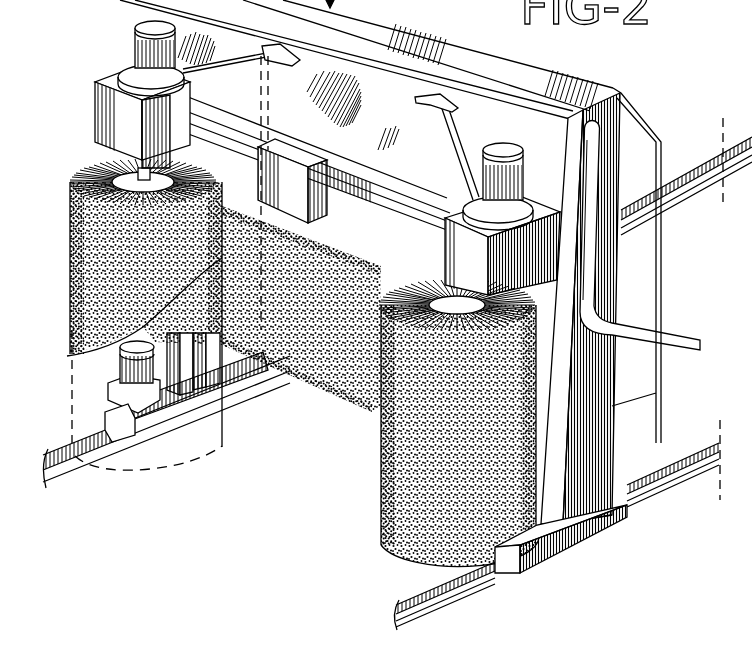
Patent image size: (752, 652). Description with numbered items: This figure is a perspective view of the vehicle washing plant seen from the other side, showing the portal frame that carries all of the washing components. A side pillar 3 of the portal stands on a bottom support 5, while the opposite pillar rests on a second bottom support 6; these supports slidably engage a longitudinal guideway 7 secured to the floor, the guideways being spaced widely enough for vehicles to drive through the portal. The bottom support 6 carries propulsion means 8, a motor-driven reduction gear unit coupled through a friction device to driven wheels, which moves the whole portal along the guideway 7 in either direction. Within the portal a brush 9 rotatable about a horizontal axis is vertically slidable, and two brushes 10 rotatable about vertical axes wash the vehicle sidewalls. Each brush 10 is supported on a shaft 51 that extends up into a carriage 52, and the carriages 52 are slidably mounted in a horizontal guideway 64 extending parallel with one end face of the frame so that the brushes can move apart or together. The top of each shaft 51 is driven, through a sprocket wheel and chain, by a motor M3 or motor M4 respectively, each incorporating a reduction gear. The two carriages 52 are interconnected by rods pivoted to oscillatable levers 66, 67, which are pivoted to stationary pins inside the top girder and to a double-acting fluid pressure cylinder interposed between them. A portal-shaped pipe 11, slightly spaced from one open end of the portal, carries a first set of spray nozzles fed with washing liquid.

The side pillar 3 is at (608, 454).
The bottom support 5 is at (614, 522).
The bottom support 6 is at (200, 407).
The longitudinal guideway 7 is at (82, 465).
The propulsion means 8 is at (128, 366).
The brush 9 is at (332, 376).
The brush 10 is at (80, 178).
The pipe 11 is at (650, 122).
The shaft 51 is at (198, 165).
The carriage 52 is at (100, 115).
The horizontal guideway 64 is at (372, 218).
The oscillatable lever 66 is at (231, 65).
The oscillatable lever 67 is at (448, 142).
The motor M3 is at (534, 147).
The motor M4 is at (135, 40).